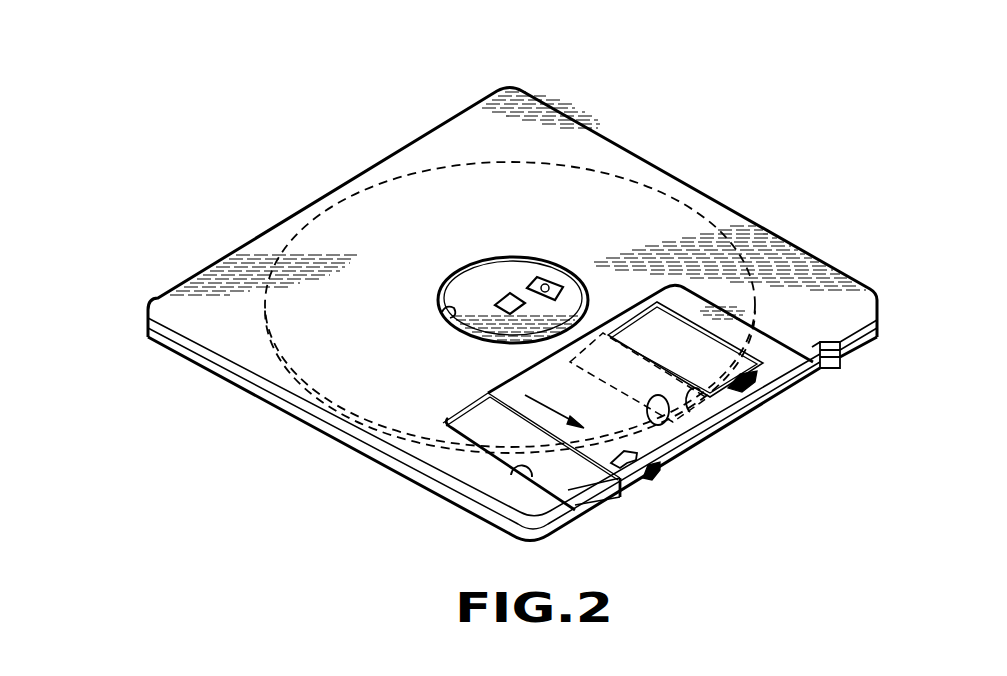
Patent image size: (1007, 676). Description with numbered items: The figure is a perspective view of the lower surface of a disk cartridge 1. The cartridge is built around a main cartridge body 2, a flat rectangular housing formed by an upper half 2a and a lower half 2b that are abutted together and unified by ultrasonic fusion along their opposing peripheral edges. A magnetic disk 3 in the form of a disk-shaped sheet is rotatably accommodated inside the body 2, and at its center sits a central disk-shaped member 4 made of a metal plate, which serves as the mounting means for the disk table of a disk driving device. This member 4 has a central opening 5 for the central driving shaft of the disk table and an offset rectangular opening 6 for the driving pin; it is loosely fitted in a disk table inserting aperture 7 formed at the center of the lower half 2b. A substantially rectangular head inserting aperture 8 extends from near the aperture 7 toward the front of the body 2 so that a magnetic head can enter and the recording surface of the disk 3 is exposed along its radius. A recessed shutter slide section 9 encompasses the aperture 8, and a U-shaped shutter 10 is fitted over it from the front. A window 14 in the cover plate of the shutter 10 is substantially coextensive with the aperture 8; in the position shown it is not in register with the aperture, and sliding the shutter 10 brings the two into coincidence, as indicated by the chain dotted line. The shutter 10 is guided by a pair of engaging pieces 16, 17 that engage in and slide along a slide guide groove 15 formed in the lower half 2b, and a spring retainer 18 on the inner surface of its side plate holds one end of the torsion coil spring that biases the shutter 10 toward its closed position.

The disk cartridge 1 is at (292, 190).
The main cartridge body 2 is at (469, 390).
The upper half 2a is at (492, 439).
The lower half 2b is at (164, 297).
The magnetic disk 3 is at (638, 190).
The central disk-shaped member 4 is at (474, 284).
The central opening 5 is at (502, 291).
The rectangular opening 6 is at (553, 282).
The disk table inserting aperture 7 is at (440, 310).
The head inserting aperture 8 is at (705, 407).
The shutter slide section 9 is at (520, 485).
The shutter 10 is at (806, 375).
The window 14 is at (758, 365).
The slide guide groove 15 is at (594, 508).
The engaging piece 16 is at (638, 479).
The engaging piece 17 is at (744, 398).
The spring retainer 18 is at (659, 473).